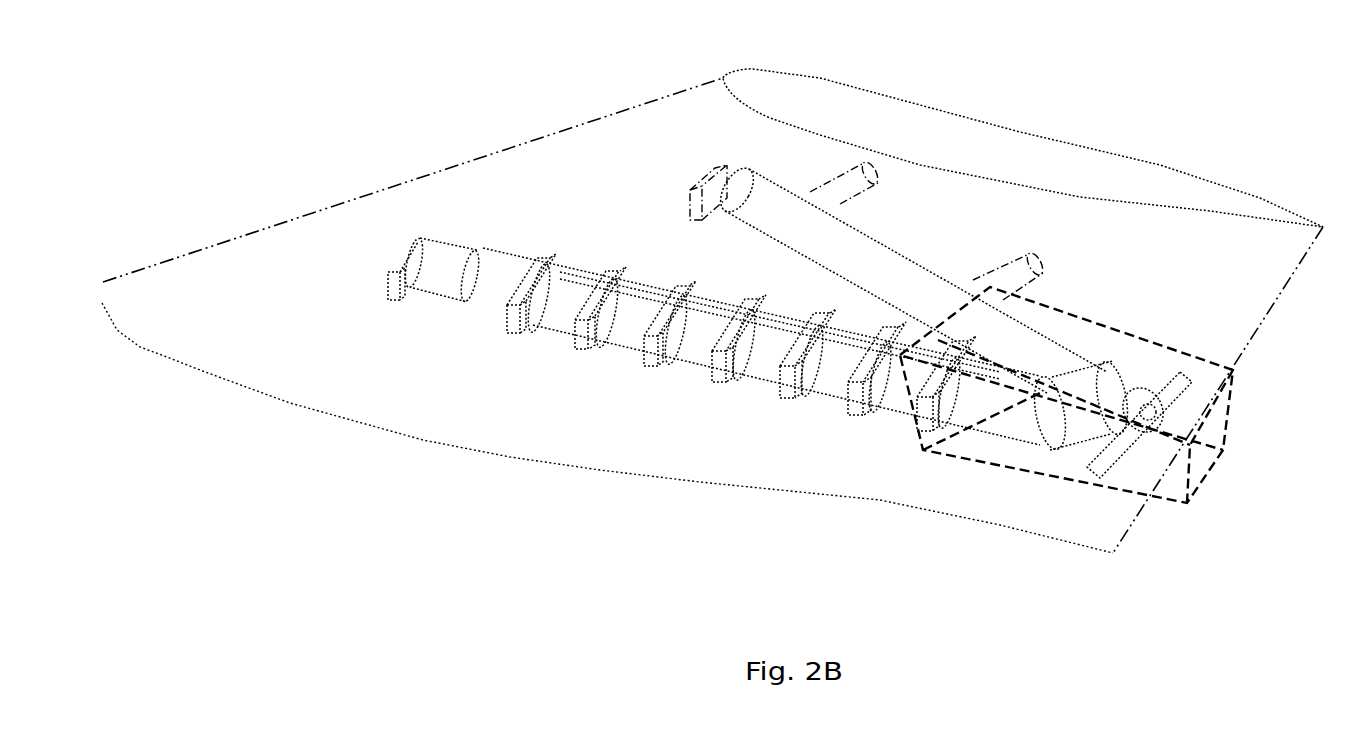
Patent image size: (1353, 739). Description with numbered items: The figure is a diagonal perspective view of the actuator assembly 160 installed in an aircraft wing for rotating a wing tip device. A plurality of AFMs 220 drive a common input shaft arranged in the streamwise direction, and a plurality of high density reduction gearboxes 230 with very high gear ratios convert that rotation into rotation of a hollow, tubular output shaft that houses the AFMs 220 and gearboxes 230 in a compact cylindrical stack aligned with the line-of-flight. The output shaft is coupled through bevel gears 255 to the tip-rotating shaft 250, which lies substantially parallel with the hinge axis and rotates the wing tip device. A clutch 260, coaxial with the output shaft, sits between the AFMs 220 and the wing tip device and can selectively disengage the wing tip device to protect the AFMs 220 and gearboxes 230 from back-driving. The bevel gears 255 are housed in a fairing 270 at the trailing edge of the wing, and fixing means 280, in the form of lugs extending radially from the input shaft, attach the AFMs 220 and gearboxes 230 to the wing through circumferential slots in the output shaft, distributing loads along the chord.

The actuator assembly 160 is at (1104, 270).
The AFMs 220 is at (495, 282).
The gearboxes 230 is at (702, 340).
The tip-rotating shaft 250 is at (917, 290).
The bevel gears 255 is at (1082, 440).
The clutch 260 is at (1002, 415).
The fairing 270 is at (1130, 472).
The fixing means 280 is at (857, 410).